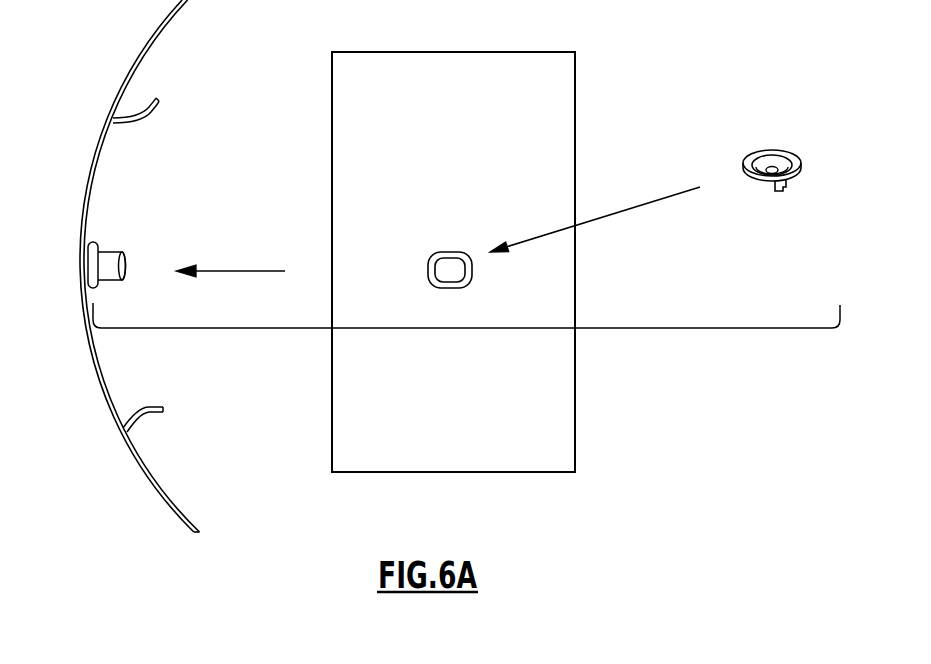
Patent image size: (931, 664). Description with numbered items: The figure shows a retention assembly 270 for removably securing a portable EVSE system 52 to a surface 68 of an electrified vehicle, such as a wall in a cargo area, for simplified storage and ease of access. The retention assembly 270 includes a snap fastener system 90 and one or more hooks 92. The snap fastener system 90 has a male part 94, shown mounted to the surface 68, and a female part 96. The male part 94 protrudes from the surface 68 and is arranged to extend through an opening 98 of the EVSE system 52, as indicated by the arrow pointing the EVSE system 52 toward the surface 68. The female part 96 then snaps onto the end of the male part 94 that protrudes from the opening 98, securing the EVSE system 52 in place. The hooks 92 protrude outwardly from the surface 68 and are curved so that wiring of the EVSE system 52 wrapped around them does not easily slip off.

The portable EVSE system 52 is at (529, 52).
The surface 68 is at (100, 138).
The snap fastener system 90 is at (143, 249).
The hooks 92 is at (145, 111).
The male part 94 is at (111, 276).
The female part 96 is at (768, 151).
The opening 98 is at (461, 283).
The retention assembly 270 is at (468, 328).